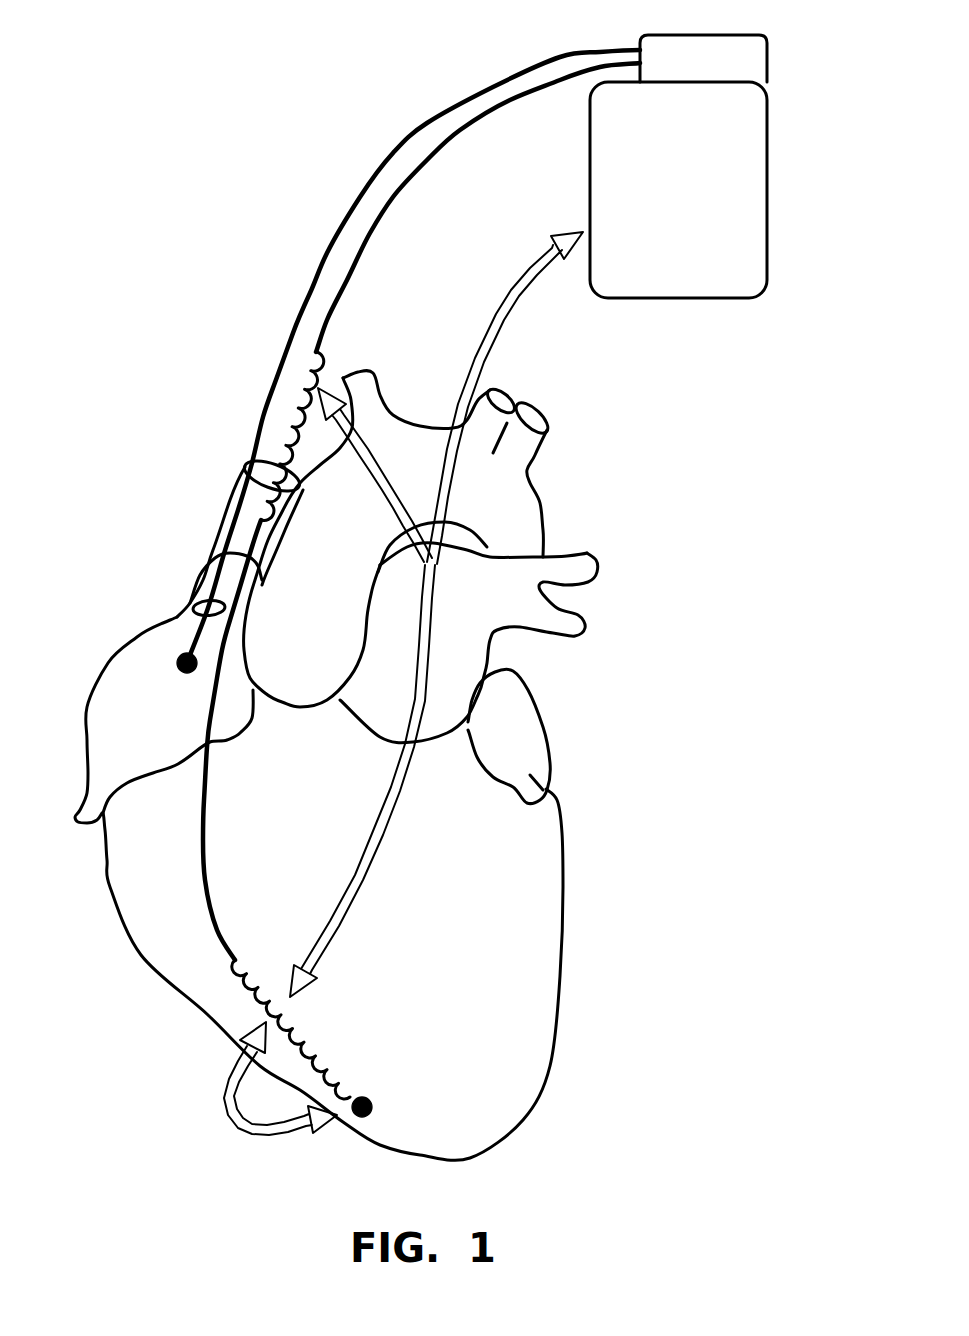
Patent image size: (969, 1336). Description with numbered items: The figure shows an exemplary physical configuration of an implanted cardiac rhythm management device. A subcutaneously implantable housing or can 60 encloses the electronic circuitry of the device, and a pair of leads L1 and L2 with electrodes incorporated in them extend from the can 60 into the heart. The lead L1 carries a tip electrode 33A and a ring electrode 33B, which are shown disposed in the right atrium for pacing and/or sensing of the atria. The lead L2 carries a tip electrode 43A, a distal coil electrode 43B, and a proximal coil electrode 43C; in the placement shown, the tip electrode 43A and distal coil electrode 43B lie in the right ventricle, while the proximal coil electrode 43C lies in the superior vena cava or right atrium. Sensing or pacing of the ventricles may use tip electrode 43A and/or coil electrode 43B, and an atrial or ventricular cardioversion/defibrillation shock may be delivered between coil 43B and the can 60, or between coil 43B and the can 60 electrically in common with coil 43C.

The housing or can 60 is at (767, 157).
The lead L1 is at (325, 272).
The lead L2 is at (430, 160).
The proximal coil electrode 43C is at (264, 430).
The distal coil electrode 43B is at (318, 1060).
The tip electrode 43A is at (372, 1100).
The ring electrode 33B is at (200, 603).
The tip electrode 33A is at (183, 660).